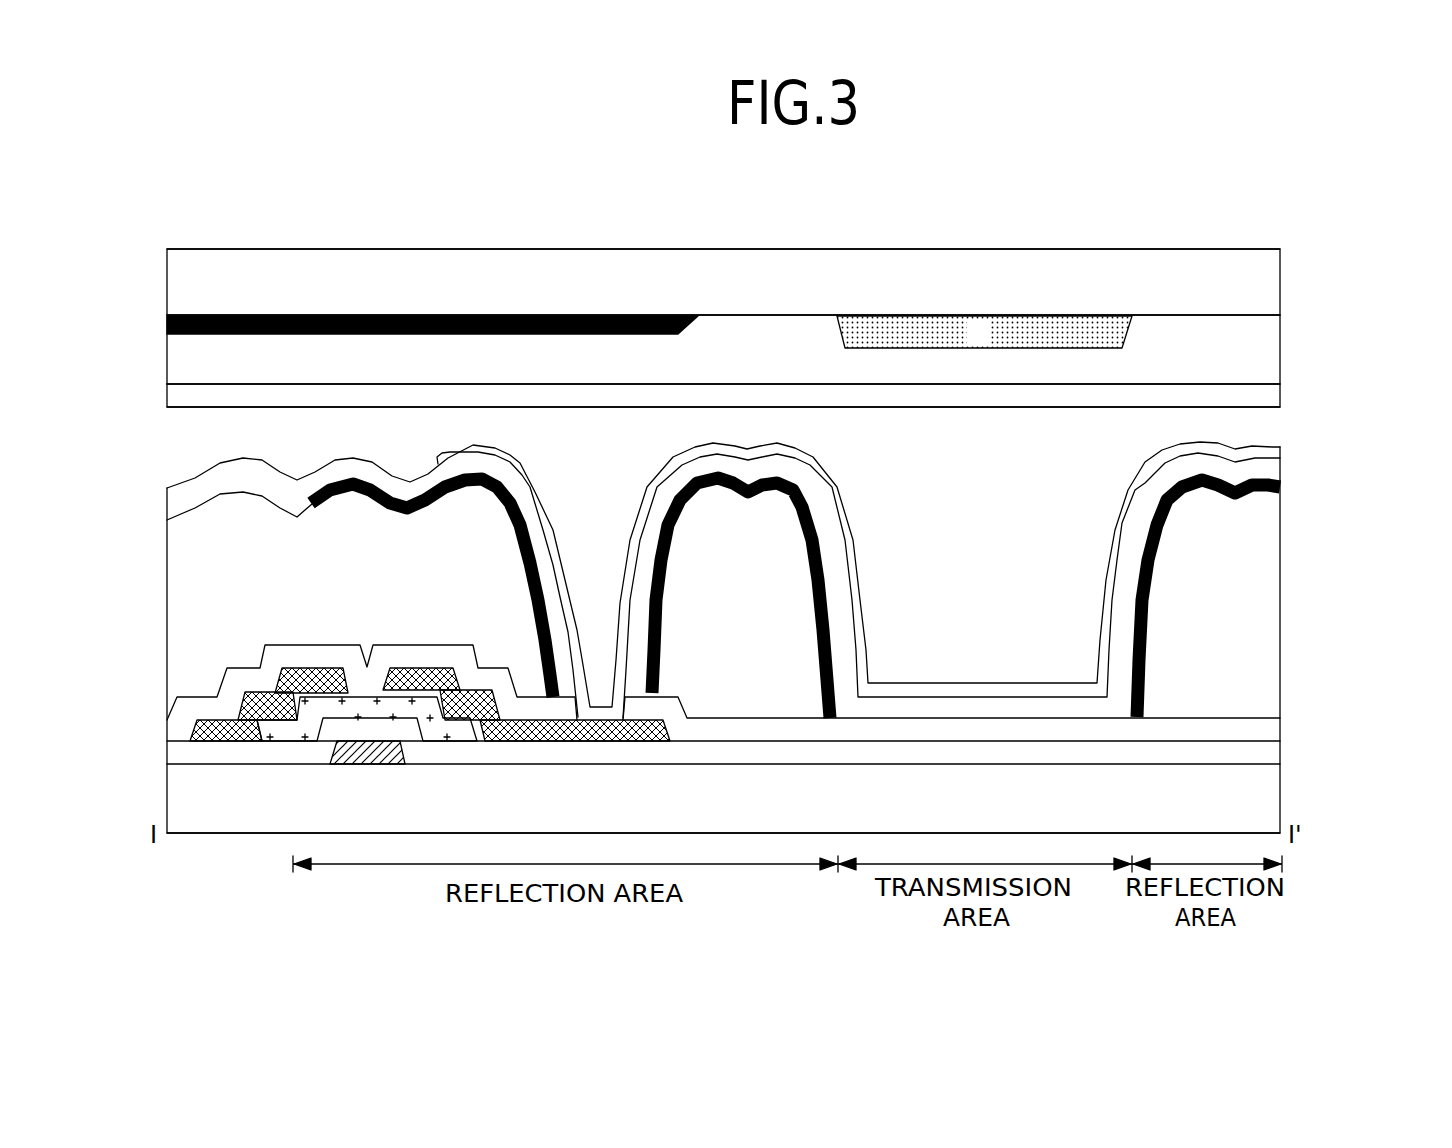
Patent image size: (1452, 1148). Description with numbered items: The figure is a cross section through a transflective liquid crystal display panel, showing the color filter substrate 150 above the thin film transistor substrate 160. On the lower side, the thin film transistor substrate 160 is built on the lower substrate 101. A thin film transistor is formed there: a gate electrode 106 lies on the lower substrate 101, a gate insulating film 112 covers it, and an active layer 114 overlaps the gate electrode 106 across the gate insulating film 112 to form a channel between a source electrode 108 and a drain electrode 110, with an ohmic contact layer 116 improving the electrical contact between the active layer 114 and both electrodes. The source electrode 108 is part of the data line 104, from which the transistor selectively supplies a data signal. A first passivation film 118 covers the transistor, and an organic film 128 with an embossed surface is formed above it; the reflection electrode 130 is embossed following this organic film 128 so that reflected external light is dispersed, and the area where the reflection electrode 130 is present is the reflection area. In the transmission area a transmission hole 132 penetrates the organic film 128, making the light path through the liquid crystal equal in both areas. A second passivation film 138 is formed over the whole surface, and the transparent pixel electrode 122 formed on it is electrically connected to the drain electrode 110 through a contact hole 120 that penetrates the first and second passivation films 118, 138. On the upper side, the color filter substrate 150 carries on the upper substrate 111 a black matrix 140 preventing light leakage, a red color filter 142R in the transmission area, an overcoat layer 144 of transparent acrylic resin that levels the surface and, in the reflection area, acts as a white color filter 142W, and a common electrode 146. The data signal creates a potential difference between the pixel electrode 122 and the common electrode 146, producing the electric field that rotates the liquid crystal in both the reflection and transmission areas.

The lower substrate 101 is at (1278, 803).
The data line 104 is at (217, 744).
The gate electrode 106 is at (372, 764).
The source electrode 108 is at (327, 693).
The drain electrode 110 is at (505, 742).
The gate insulating film 112 is at (1278, 757).
The active layer 114 is at (278, 742).
The ohmic contact layer 116 is at (457, 712).
The first passivation film 118 is at (1278, 728).
The contact hole 120 is at (598, 687).
The pixel electrode 122 is at (1278, 447).
The organic film 128 is at (1278, 655).
The reflection electrode 130 is at (1278, 507).
The transmission hole 132 is at (971, 528).
The second passivation film 138 is at (1278, 472).
The black matrix 140 is at (567, 315).
The red color filter 142R is at (1033, 323).
The white color filter 142W is at (773, 323).
The overcoat layer 144 is at (1278, 345).
The common electrode 146 is at (1278, 397).
The color filter substrate 150 is at (1337, 318).
The thin film transistor substrate 160 is at (1335, 598).
The upper substrate 111 is at (1278, 277).